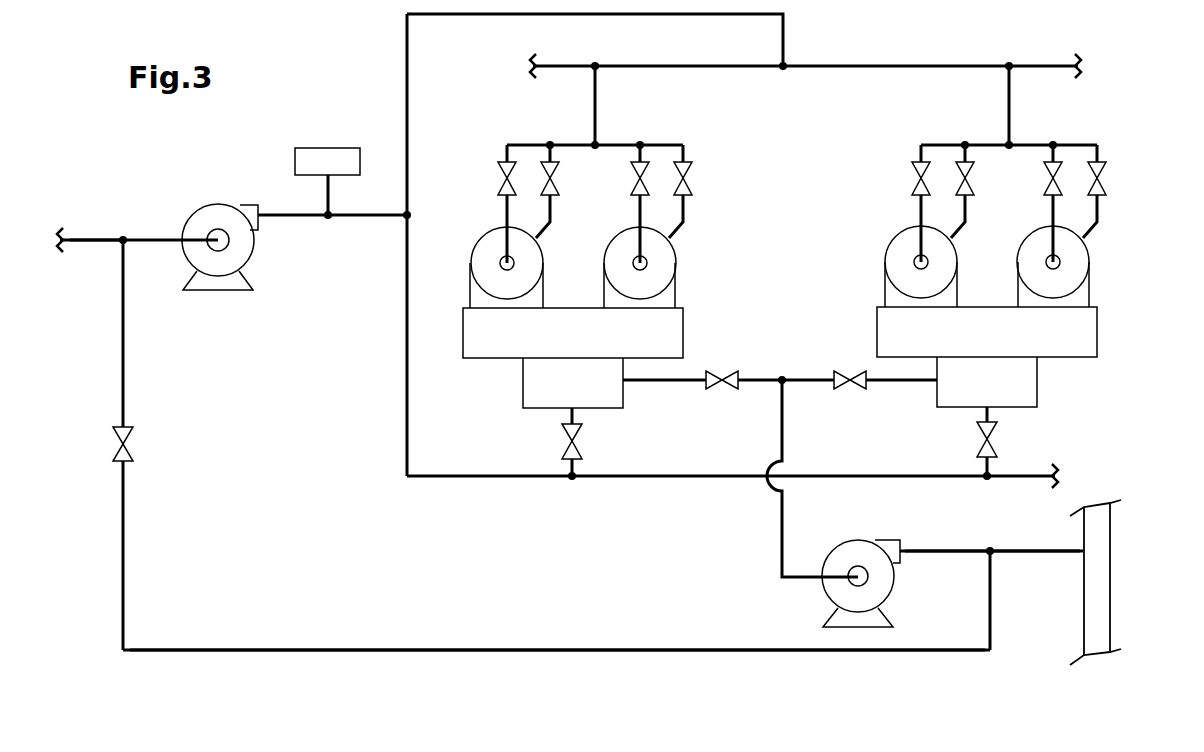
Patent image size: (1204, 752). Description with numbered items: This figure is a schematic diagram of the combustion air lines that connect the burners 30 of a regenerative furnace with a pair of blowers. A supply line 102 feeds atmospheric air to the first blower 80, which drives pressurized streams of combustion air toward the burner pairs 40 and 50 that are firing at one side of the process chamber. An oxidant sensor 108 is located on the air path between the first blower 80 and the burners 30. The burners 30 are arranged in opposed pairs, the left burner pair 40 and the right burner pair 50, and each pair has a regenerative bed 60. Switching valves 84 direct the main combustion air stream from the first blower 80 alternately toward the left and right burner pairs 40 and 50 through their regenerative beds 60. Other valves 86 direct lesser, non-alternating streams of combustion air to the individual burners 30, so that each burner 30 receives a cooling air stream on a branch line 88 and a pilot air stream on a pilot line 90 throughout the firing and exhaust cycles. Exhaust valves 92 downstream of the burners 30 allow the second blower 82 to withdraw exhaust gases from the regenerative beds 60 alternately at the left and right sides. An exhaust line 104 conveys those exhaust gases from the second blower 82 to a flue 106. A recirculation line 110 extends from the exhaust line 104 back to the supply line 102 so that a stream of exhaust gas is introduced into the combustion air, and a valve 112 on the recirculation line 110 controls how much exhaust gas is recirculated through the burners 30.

The burner 30 is at (470, 290).
The burner pair 40 is at (733, 243).
The burner pair 50 is at (860, 237).
The regenerative bed 60 is at (523, 380).
The first blower 80 is at (200, 220).
The second blower 82 is at (835, 590).
The switching valve 84 is at (568, 446).
The valve 86 is at (503, 172).
The branch line 88 is at (503, 210).
The pilot line 90 is at (550, 230).
The exhaust valve 92 is at (735, 388).
The supply line 102 is at (93, 238).
The exhaust line 104 is at (952, 548).
The flue 106 is at (1098, 568).
The oxidant sensor 108 is at (331, 158).
The recirculation line 110 is at (462, 648).
The valve 112 is at (128, 447).